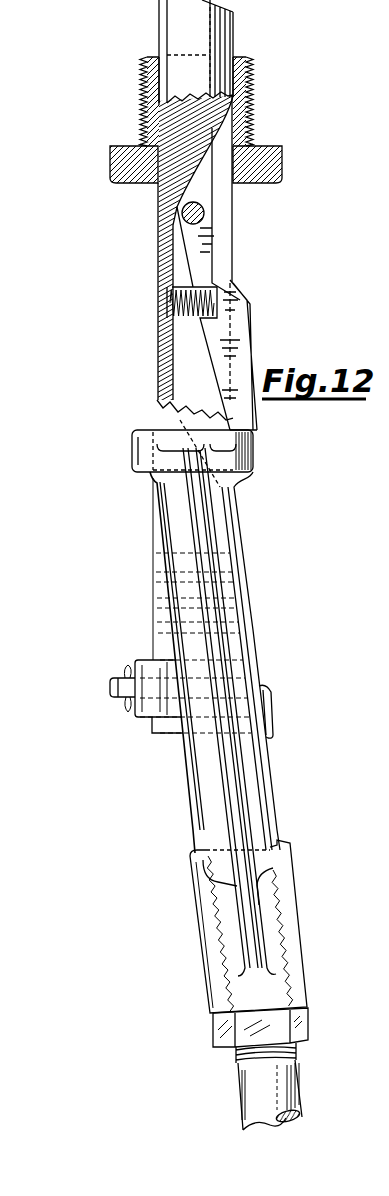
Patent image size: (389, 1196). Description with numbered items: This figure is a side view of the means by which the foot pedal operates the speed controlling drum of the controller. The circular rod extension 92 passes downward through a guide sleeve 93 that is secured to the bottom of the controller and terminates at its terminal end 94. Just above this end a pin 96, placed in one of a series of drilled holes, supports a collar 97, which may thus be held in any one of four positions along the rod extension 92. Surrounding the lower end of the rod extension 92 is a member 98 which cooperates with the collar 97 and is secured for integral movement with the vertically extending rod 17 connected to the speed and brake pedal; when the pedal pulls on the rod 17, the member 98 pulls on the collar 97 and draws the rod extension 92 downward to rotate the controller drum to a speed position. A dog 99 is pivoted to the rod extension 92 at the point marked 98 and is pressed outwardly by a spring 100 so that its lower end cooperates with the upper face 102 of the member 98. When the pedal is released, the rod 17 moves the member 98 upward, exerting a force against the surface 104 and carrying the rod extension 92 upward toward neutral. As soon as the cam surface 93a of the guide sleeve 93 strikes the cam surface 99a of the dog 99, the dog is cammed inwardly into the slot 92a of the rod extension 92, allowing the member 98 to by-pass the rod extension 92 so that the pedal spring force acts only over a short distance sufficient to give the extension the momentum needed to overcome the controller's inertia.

The rod 17 is at (300, 1080).
The rod extension 92 is at (183, 31).
The slot 92a is at (223, 137).
The guide sleeve 93 is at (282, 171).
The cam surface 93a is at (241, 186).
The terminal end 94 is at (168, 733).
The pin 96 is at (274, 708).
The collar 97 is at (138, 718).
The member 98 is at (182, 216).
The dog 99 is at (241, 307).
The cam surface 99a is at (229, 282).
The spring 100 is at (167, 302).
The upper face 102 is at (150, 432).
The surface 104 is at (245, 428).